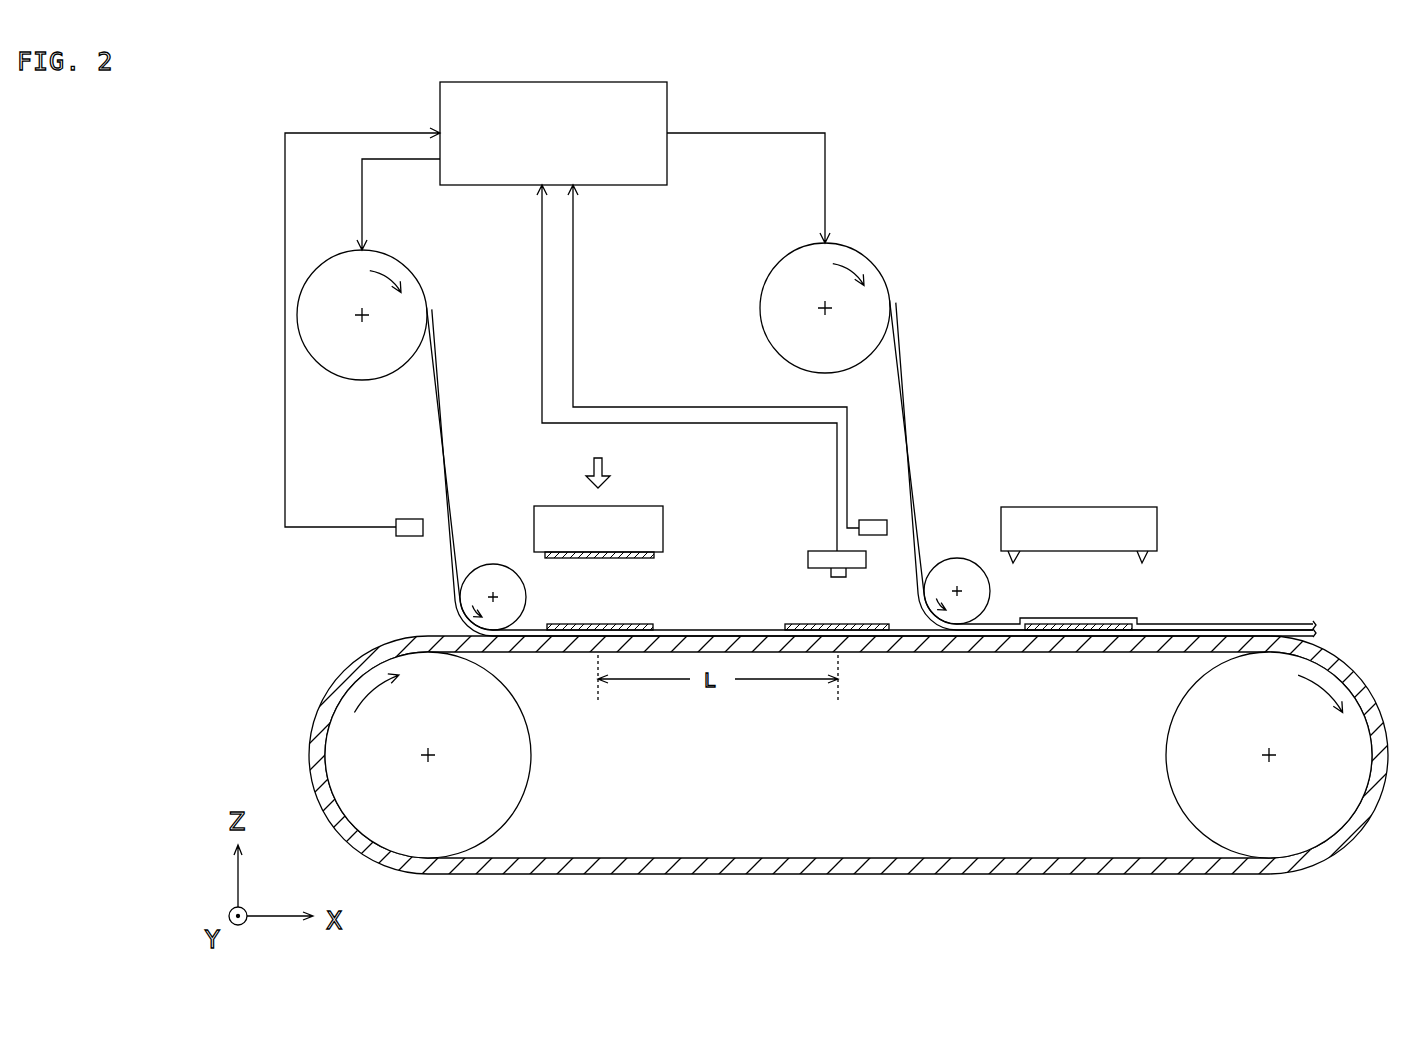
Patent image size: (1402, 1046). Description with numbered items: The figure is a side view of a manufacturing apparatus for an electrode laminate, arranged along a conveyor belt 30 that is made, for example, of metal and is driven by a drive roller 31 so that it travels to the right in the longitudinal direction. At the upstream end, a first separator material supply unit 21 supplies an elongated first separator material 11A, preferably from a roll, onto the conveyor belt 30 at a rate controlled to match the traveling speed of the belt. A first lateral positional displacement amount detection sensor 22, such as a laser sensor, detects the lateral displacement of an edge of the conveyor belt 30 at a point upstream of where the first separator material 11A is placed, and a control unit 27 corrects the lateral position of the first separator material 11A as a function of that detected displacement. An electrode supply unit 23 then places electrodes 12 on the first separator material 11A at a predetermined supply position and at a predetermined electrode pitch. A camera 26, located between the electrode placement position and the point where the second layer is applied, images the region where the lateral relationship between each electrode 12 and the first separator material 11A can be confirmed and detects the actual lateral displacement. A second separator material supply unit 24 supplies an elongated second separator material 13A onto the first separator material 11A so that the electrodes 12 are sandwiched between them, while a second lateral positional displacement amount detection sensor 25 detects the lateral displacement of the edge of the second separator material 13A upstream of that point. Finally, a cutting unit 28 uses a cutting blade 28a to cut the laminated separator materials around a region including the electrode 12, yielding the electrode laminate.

The first separator material 11A is at (438, 395).
The electrode 12 is at (570, 622).
The second separator material 13A is at (903, 383).
The first separator material supply unit 21 is at (400, 258).
The first lateral positional displacement amount detection sensor 22 is at (397, 537).
The electrode supply unit 23 is at (555, 505).
The second separator material supply unit 24 is at (866, 253).
The second lateral positional displacement amount detection sensor 25 is at (877, 517).
The camera 26 is at (822, 549).
The control unit 27 is at (667, 95).
The cutting unit 28 is at (1157, 511).
The cutting blade 28a is at (1150, 558).
The conveyor belt 30 is at (828, 874).
The drive roller 31 is at (505, 822).